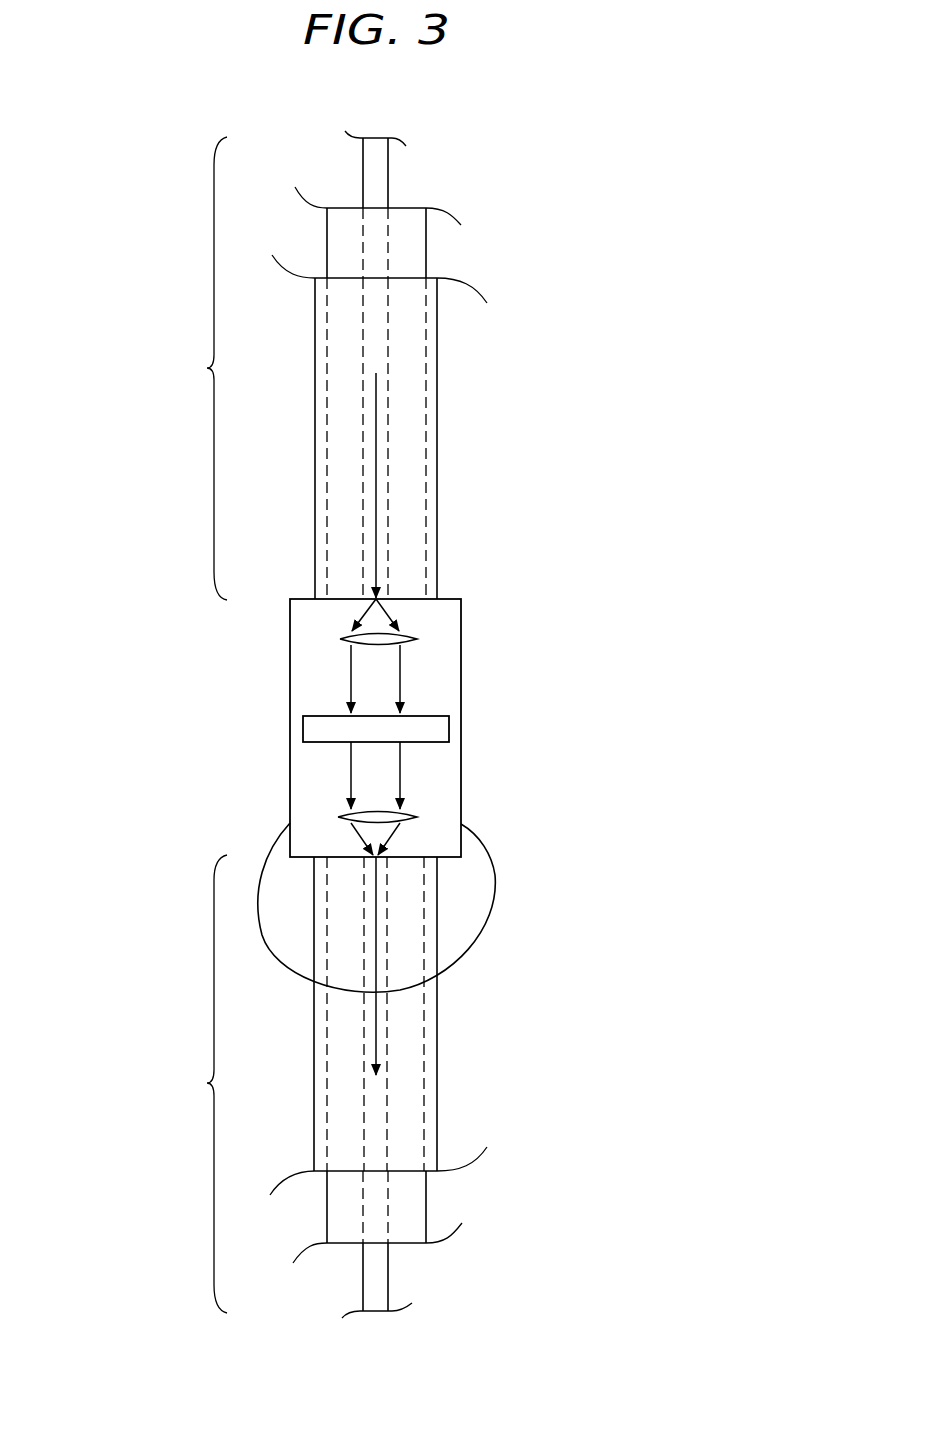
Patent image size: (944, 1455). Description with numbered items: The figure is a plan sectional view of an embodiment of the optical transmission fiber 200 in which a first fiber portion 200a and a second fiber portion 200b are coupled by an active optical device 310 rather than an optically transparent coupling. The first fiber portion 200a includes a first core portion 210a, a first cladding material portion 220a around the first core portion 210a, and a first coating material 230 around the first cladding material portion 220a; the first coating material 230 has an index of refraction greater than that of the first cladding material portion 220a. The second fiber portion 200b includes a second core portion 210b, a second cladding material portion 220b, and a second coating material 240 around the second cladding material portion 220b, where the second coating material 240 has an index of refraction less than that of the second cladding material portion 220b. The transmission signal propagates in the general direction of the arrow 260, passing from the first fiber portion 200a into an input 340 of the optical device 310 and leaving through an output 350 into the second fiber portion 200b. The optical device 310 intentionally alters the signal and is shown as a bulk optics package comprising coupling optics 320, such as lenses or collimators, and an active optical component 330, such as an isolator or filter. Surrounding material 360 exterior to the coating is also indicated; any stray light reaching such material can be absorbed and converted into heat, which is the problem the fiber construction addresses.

The optical transmission fiber 200 is at (572, 122).
The first fiber portion 200a is at (207, 368).
The second fiber portion 200b is at (207, 1083).
The first core portion 210a is at (388, 172).
The second core portion 210b is at (388, 1280).
The first cladding material portion 220a is at (426, 262).
The second cladding material portion 220b is at (426, 1202).
The first coating material 230 is at (437, 357).
The second coating material 240 is at (437, 1100).
The arrow 260 is at (376, 444).
The active optical device 310 is at (461, 790).
The coupling optics 320 is at (340, 640).
The active optical component 330 is at (449, 730).
The input 340 is at (448, 596).
The output 350 is at (447, 862).
The surrounding material 360 is at (495, 872).